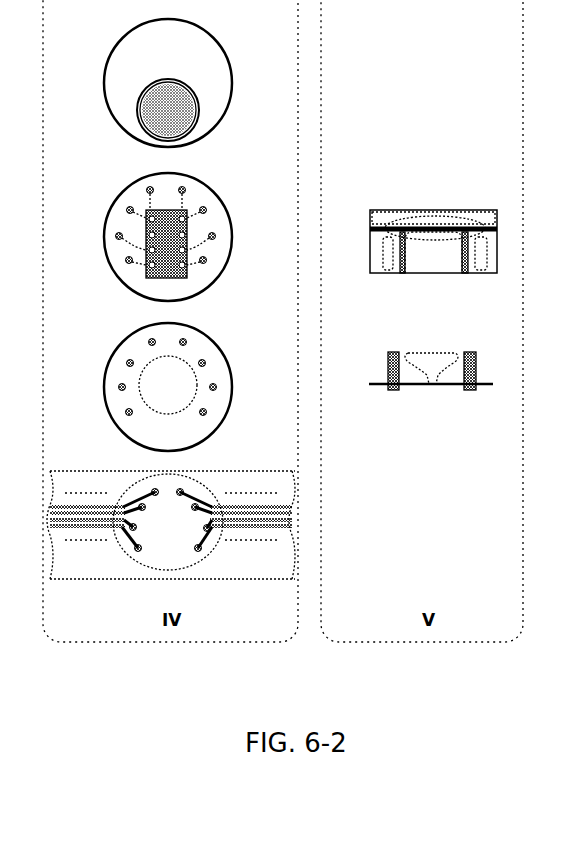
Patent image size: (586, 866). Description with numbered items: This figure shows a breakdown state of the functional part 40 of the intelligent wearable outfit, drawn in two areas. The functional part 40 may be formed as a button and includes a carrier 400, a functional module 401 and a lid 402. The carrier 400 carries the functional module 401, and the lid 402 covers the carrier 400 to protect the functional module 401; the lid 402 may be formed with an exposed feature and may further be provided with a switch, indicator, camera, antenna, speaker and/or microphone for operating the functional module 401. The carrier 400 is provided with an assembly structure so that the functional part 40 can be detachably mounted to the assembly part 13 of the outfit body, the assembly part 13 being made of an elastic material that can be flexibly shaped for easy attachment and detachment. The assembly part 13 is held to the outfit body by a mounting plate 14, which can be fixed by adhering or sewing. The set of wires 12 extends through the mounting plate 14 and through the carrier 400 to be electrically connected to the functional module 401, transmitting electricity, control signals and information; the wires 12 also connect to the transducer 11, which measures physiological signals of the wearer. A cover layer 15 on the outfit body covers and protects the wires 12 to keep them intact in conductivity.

The transducer 11 is at (214, 572).
The set of wires 12 is at (185, 340).
The assembly part 13 is at (182, 382).
The mounting plate 14 is at (178, 425).
The cover layer 15 is at (133, 490).
The functional part 40 is at (383, 206).
The carrier 400 is at (480, 212).
The functional module 401 is at (176, 212).
The lid 402 is at (163, 68).